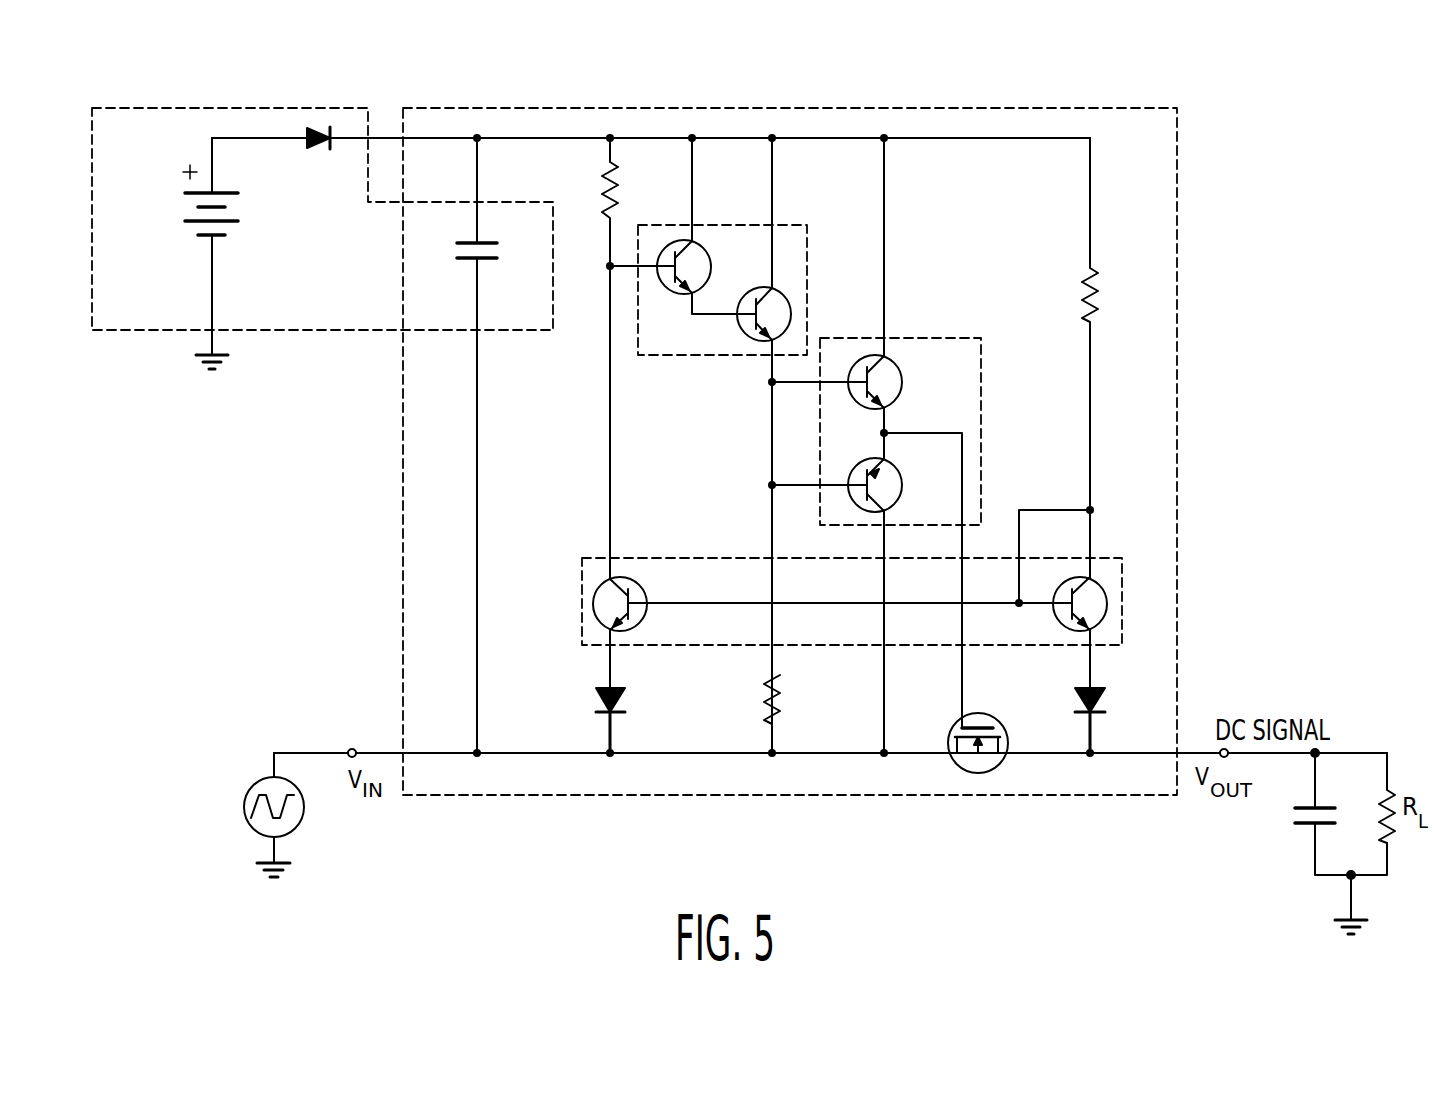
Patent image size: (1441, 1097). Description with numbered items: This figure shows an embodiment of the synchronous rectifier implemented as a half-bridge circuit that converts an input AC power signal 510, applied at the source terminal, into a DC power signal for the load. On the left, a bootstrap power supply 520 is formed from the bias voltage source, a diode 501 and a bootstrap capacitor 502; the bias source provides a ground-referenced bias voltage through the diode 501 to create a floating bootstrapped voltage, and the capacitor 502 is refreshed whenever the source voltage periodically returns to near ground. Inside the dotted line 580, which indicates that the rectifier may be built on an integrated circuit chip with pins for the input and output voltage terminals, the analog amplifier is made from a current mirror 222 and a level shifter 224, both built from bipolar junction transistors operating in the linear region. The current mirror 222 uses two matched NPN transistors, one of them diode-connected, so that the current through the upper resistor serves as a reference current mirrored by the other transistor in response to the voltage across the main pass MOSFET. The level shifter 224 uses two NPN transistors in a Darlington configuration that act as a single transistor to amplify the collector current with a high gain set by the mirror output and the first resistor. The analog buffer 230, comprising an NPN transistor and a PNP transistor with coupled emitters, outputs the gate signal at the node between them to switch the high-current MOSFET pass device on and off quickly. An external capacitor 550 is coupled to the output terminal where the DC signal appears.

The bootstrap power supply 520 is at (178, 108).
The diode 501 is at (308, 150).
The capacitor 502 is at (485, 262).
The level shifter 224 is at (808, 245).
The analog buffer 230 is at (945, 338).
The current mirror 222 is at (600, 558).
The integrated circuit chip 580 is at (1178, 280).
The input AC power signal 510 is at (245, 808).
The capacitor 550 is at (1305, 828).